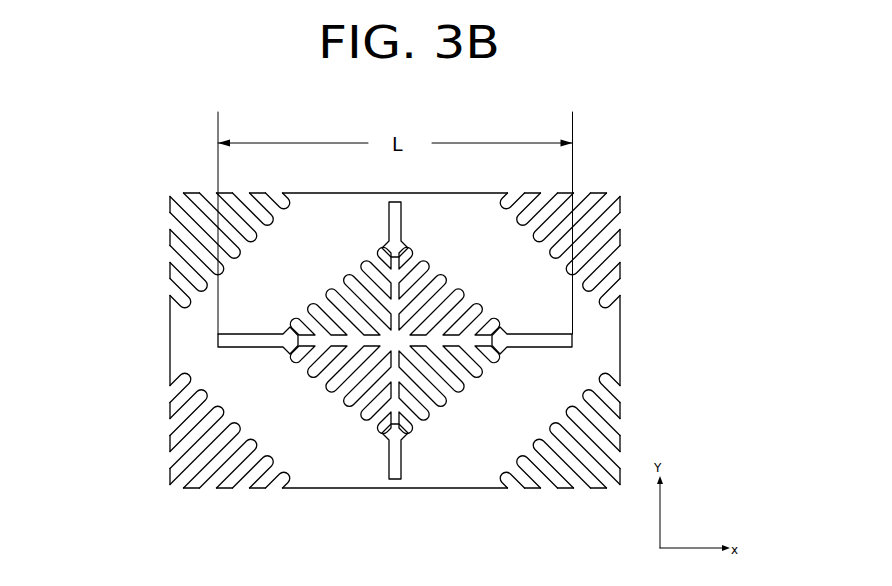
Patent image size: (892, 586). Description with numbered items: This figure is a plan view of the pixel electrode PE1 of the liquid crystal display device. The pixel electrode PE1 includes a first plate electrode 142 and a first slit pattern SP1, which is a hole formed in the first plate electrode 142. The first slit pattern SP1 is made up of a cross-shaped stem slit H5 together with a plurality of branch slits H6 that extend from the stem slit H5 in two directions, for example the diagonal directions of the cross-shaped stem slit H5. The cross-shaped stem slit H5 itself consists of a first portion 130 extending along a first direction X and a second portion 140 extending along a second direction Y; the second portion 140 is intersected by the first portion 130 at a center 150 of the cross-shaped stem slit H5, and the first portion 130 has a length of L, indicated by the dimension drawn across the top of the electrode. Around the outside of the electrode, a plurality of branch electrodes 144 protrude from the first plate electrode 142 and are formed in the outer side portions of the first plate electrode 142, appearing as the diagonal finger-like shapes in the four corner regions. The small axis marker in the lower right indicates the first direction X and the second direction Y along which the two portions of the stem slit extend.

The first portion 130 is at (612, 362).
The second portion 140 is at (393, 398).
The first plate electrode 142 is at (350, 470).
The branch electrodes 144 is at (207, 462).
The center 150 is at (392, 345).
The cross-shaped stem slit H5 is at (398, 482).
The branch slits H6 is at (484, 366).
The first slit pattern SP1 is at (431, 440).
The pixel electrode PE1 is at (307, 490).